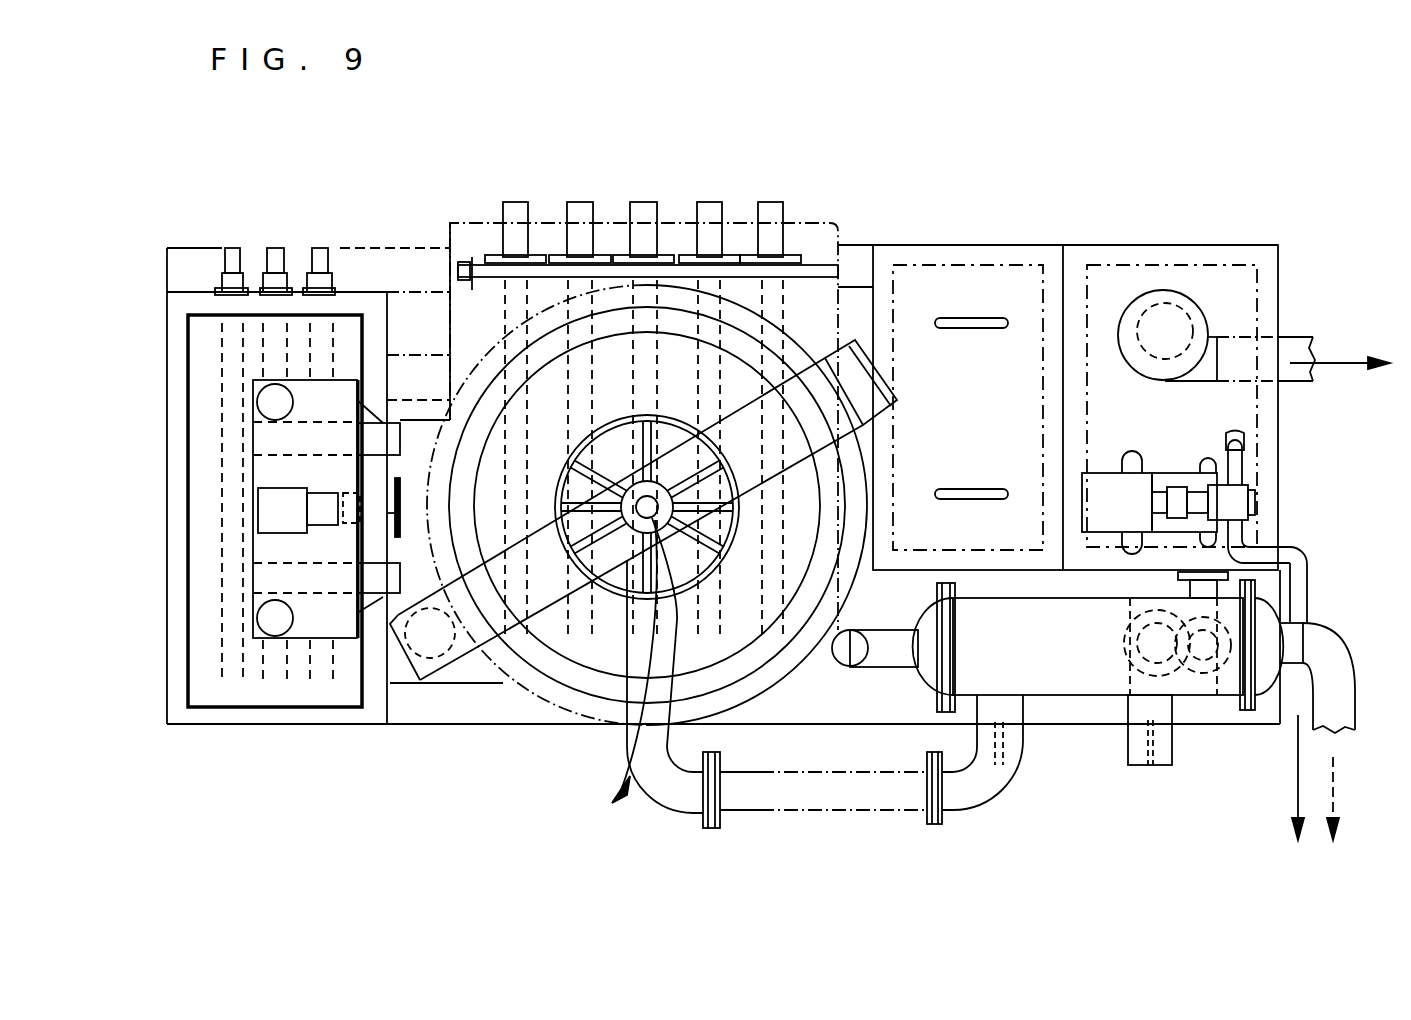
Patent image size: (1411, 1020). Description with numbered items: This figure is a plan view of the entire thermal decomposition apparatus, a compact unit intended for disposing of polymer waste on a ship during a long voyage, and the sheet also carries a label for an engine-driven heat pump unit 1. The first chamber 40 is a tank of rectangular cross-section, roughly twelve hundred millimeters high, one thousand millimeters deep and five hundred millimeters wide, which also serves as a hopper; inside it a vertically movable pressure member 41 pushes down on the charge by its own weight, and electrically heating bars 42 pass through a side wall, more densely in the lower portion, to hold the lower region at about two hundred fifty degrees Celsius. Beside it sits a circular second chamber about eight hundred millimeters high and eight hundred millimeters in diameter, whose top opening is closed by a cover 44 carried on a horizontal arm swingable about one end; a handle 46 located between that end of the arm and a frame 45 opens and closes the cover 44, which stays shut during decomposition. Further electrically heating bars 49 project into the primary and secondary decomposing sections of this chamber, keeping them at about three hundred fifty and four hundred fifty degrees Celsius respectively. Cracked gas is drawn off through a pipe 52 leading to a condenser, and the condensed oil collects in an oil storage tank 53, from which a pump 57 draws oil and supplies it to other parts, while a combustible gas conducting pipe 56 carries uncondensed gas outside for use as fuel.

The engine-driven heat pump unit 1 is at (723, 380).
The first chamber 40 is at (335, 538).
The pressure member 41 is at (294, 560).
The electrically heating bars 42 is at (275, 227).
The cover 44 is at (647, 552).
The frame 45 is at (643, 427).
The handle 46 is at (655, 521).
The electrically heating bars 49 is at (661, 385).
The pipe 52 is at (825, 700).
The oil storage tank 53 is at (1075, 372).
The combustible gas conducting pipe 56 is at (1254, 322).
The pump 57 is at (1194, 512).